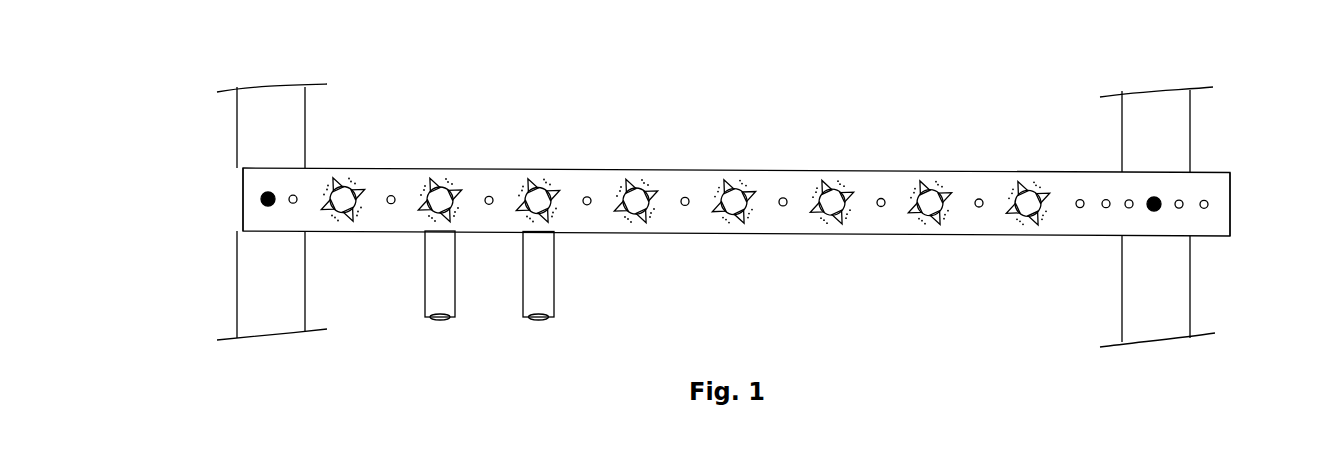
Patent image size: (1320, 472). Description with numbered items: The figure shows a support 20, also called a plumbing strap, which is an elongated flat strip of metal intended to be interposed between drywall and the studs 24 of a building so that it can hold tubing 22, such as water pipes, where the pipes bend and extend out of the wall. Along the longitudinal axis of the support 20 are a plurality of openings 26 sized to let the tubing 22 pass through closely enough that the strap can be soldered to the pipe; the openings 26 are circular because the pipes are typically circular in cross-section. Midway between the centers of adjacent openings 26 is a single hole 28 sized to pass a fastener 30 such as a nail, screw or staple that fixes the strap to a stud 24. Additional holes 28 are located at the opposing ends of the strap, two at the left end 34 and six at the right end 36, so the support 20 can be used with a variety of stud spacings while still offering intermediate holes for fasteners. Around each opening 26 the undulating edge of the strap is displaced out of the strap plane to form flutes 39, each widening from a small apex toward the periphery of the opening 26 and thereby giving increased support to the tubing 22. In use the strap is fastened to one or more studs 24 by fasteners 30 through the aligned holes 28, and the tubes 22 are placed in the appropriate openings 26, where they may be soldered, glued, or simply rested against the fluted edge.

The support 20 is at (399, 188).
The tubing 22 is at (438, 196).
The studs 24 is at (285, 128).
The openings 26 is at (727, 208).
The hole 28 is at (685, 197).
The fastener 30 is at (272, 197).
The left end 34 is at (253, 183).
The right end 36 is at (1220, 223).
The flutes 39 is at (852, 194).